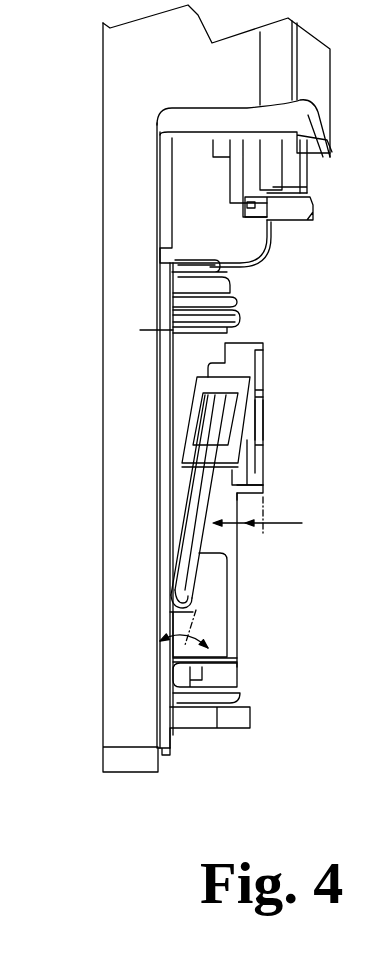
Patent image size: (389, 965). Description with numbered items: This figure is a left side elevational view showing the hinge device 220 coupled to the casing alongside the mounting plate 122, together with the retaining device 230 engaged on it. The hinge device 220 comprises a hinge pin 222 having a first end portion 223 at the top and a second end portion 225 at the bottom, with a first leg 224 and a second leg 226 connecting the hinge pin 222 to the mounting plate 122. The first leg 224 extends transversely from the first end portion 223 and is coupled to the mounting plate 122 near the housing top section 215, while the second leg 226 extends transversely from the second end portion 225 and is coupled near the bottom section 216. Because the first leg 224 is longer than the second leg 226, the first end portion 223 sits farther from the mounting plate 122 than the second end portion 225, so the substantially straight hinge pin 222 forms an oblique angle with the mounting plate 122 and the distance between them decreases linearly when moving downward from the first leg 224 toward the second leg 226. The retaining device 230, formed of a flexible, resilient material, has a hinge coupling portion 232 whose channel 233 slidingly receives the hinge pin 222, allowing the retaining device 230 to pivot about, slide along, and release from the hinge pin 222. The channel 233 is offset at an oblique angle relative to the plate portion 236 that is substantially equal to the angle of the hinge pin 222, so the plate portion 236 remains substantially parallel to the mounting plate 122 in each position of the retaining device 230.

The mounting plate 122 is at (103, 707).
The top section 215 is at (222, 272).
The bottom section 216 is at (232, 695).
The hinge device 220 is at (136, 443).
The hinge pin 222 is at (180, 517).
The first end portion 223 is at (140, 386).
The first leg 224 is at (180, 369).
The second end portion 225 is at (230, 573).
The second leg 226 is at (168, 615).
The retaining device 230 is at (292, 378).
The hinge coupling portion 232 is at (252, 470).
The channel 233 is at (189, 482).
The plate portion 236 is at (263, 424).